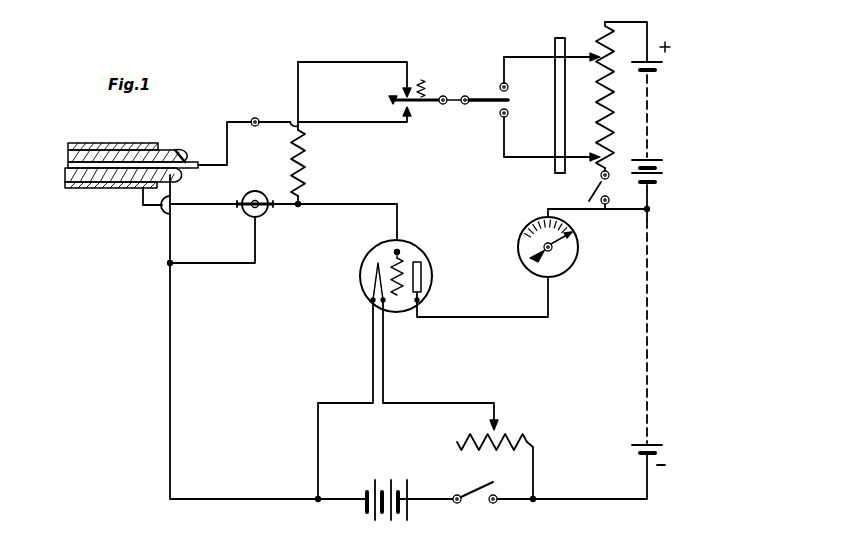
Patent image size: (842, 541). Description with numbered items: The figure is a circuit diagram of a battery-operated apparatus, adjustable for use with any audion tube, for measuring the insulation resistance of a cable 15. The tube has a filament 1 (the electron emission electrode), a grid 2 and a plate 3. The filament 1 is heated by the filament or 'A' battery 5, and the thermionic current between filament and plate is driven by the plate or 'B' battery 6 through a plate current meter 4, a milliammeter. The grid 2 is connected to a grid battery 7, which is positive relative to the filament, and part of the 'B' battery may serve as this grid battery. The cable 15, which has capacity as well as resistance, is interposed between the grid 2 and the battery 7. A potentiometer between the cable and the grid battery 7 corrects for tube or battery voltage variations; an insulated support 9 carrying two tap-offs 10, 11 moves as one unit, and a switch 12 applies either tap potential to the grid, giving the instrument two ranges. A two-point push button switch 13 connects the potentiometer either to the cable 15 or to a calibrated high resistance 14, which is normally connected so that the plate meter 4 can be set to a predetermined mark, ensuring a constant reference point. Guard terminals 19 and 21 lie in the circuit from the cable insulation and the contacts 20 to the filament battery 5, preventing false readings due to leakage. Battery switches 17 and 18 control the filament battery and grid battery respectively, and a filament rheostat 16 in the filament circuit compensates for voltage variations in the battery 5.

The filament 1 is at (375, 272).
The grid 2 is at (400, 265).
The plate 3 is at (419, 278).
The plate current meter 4 is at (563, 268).
The filament battery 5 is at (383, 510).
The plate battery 6 is at (600, 58).
The grid battery 7 is at (648, 121).
The insulated support 9 is at (555, 48).
The tap-off 10 is at (571, 57).
The tap-off 11 is at (583, 162).
The switch 12 is at (488, 96).
The two-point push button switch 13 is at (425, 95).
The calibrated high resistance 14 is at (305, 165).
The cable 15 is at (122, 188).
The filament rheostat 16 is at (502, 435).
The battery switch 17 is at (474, 491).
The battery switch 18 is at (607, 186).
The guard terminal 19 is at (170, 150).
The contacts 20 is at (255, 118).
The guard terminal 21 is at (246, 216).